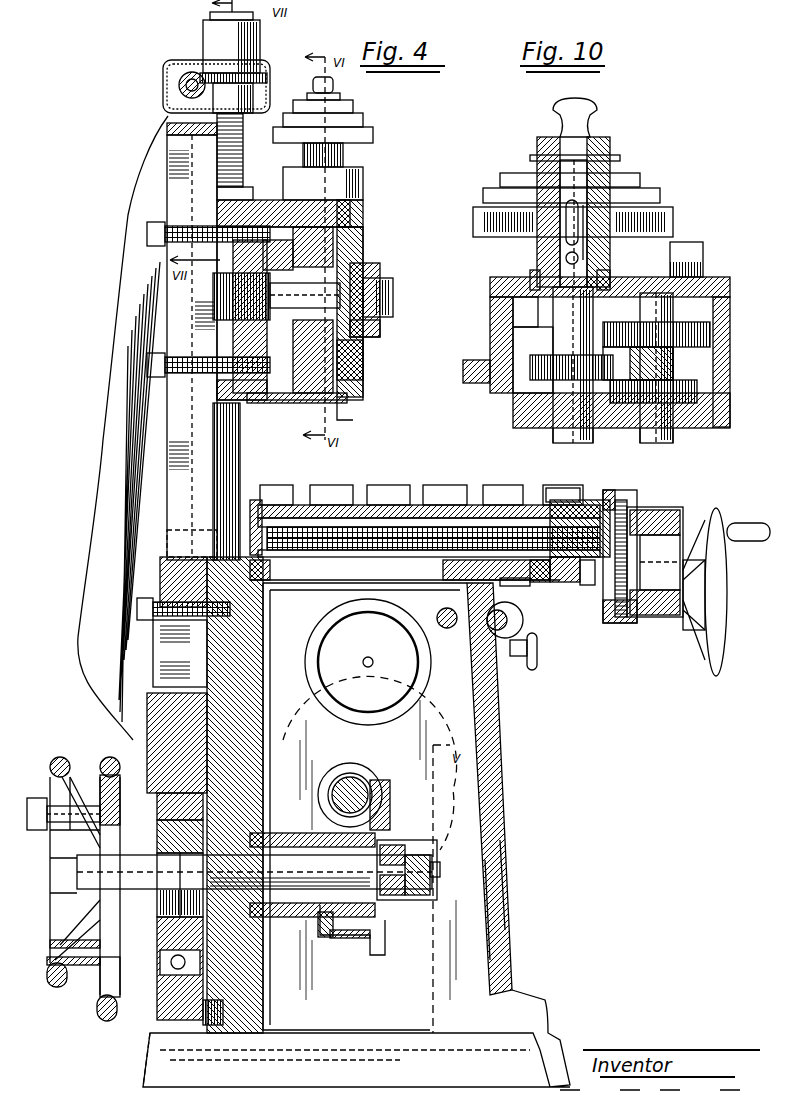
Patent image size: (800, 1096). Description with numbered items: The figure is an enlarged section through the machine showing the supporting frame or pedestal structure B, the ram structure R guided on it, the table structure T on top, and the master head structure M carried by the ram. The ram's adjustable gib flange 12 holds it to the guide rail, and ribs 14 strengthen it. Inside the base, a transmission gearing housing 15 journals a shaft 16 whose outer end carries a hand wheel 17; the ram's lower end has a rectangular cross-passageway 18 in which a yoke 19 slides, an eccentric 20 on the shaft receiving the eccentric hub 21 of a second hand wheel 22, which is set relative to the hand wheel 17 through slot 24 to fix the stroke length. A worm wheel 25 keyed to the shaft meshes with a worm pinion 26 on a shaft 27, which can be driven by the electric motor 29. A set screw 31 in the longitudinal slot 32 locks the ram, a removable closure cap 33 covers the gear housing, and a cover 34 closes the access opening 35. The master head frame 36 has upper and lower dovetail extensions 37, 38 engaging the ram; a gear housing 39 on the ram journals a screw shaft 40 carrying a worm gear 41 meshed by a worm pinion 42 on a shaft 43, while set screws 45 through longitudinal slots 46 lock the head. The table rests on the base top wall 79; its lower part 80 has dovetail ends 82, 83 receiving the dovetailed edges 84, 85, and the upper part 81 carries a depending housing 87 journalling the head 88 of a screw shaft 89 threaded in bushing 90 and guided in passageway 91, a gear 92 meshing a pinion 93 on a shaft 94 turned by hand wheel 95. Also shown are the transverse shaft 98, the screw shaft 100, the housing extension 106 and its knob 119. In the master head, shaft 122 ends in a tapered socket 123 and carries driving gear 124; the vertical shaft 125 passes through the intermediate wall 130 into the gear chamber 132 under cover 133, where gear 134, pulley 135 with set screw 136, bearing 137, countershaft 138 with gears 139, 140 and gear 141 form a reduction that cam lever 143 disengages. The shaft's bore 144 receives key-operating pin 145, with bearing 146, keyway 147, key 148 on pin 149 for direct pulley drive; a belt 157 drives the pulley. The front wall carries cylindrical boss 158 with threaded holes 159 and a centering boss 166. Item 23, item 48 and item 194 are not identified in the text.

In FIG. 4, the flange 12 is at (235, 453).
In FIG. 4, the ribs 14 is at (108, 496).
In FIG. 4, the transmission gearing housing 15 is at (330, 935).
In FIG. 4, the shaft 16 is at (282, 853).
In FIG. 4, the hand wheel 17 is at (58, 757).
In FIG. 4, the cross-passageway 18 is at (163, 805).
In FIG. 4, the yoke 19 is at (162, 835).
In FIG. 4, the eccentric 20 is at (165, 905).
In FIG. 4, the eccentric hub 21 is at (118, 985).
In FIG. 4, the hand wheel 22 is at (104, 1015).
In FIG. 4, the pin 23 is at (38, 800).
In FIG. 4, the slot 24 is at (55, 957).
In FIG. 4, the worm wheel 25 is at (355, 935).
In FIG. 4, the worm pinion 26 is at (378, 800).
In FIG. 4, the shaft 27 is at (352, 790).
In FIG. 4, the electric motor 29 is at (420, 707).
In FIG. 4, the set screw 31 is at (195, 622).
In FIG. 4, the longitudinal slot 32 is at (170, 660).
In FIG. 4, the removable closure cap 33 is at (422, 900).
In FIG. 4, the removable cover 34 is at (505, 880).
In FIG. 4, the access opening 35 is at (496, 912).
In FIG. 4, the frame 36 is at (345, 405).
In FIG. 4, the upper dovetail extension 37 is at (220, 212).
In FIG. 4, the lower dovetail extension 38 is at (225, 390).
In FIG. 4, the gear housing 39 is at (165, 80).
In FIG. 4, the screw shaft 40 is at (244, 158).
In FIG. 4, the worm gear 41 is at (264, 75).
In FIG. 4, the worm pinion 42 is at (192, 72).
In FIG. 4, the shaft 43 is at (180, 94).
In FIG. 4, the set screws 45 is at (170, 245).
In FIG. 4, the longitudinal slots 46 is at (175, 298).
In FIG. 4, the dial 48 is at (345, 632).
In FIG. 4, the top wall 79 is at (520, 586).
In FIG. 4, the lower table part 80 is at (580, 582).
In FIG. 4, the upper table part 81 is at (437, 503).
In FIG. 4, the dovetail end 82 is at (580, 588).
In FIG. 4, the dovetail end 83 is at (160, 565).
In FIG. 4, the front dovetailed edge 84 is at (545, 578).
In FIG. 4, the rear dovetailed edge 85 is at (200, 550).
In FIG. 4, the depending housing 87 is at (648, 510).
In FIG. 4, the head 88 is at (648, 522).
In FIG. 4, the screw shaft 89 is at (405, 550).
In FIG. 4, the bushing 90 is at (532, 503).
In FIG. 4, the passageway 91 is at (258, 520).
In FIG. 4, the gear 92 is at (630, 500).
In FIG. 4, the pinion 93 is at (621, 620).
In FIG. 4, the shaft 94 is at (678, 600).
In FIG. 4, the hand wheel 95 is at (728, 596).
In FIG. 4, the shaft 98 is at (499, 609).
In FIG. 4, the screw shaft 100 is at (447, 608).
In FIG. 4, the housing extension 106 is at (523, 620).
In FIG. 4, the knob 119 is at (537, 660).
In FIG. 4, the shaft 122 is at (290, 280).
In FIG. 4, the tapered recess or socket 123 is at (393, 278).
In FIG. 4, the driving gear 124 is at (290, 245).
In FIG. 4, the shaft 125 is at (300, 385).
In FIG. 10, the shaft 125 is at (515, 340).
In FIG. 10, the intermediate wall 130 is at (630, 420).
In FIG. 10, the gear chamber 132 is at (700, 370).
In FIG. 10, the cover 133 is at (730, 290).
In FIG. 10, the gear 134 is at (520, 305).
In FIG. 4, the pulley 135 is at (373, 135).
In FIG. 10, the pulley 135 is at (668, 215).
In FIG. 10, the set screw 136 is at (608, 280).
In FIG. 10, the bearing 137 is at (530, 278).
In FIG. 10, the countershaft 138 is at (665, 316).
In FIG. 10, the gear 139 is at (710, 335).
In FIG. 10, the gear 140 is at (697, 395).
In FIG. 10, the gear 141 is at (530, 370).
In FIG. 10, the cam lever 143 is at (703, 268).
In FIG. 10, the bore 144 is at (565, 325).
In FIG. 10, the key-operating pin 145 is at (583, 108).
In FIG. 10, the bearing 146 is at (540, 175).
In FIG. 10, the keyway 147 is at (600, 200).
In FIG. 10, the key 148 is at (560, 240).
In FIG. 10, the pin 149 is at (595, 255).
In FIG. 4, the belt 157 is at (350, 110).
In FIG. 4, the cylindrical boss 158 is at (363, 215).
In FIG. 4, the threaded holes 159 is at (363, 365).
In FIG. 4, the centering boss 166 is at (368, 335).
In FIG. 10, the pin 194 is at (560, 265).
In FIG. 4, the supporting frame or pedestal structure B is at (492, 806).
In FIG. 4, the master head structure M is at (365, 262).
In FIG. 4, the ram structure R is at (175, 413).
In FIG. 4, the table structure T is at (615, 478).